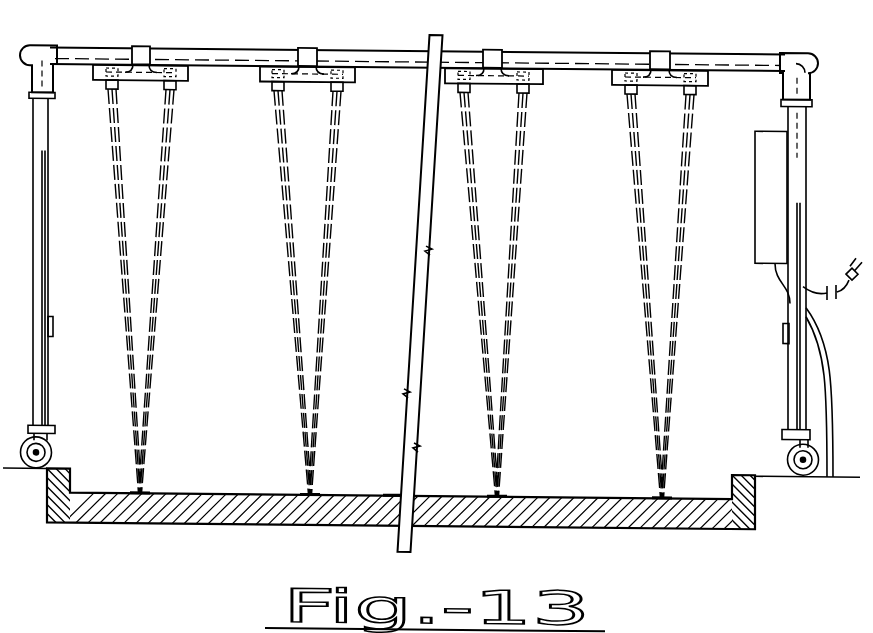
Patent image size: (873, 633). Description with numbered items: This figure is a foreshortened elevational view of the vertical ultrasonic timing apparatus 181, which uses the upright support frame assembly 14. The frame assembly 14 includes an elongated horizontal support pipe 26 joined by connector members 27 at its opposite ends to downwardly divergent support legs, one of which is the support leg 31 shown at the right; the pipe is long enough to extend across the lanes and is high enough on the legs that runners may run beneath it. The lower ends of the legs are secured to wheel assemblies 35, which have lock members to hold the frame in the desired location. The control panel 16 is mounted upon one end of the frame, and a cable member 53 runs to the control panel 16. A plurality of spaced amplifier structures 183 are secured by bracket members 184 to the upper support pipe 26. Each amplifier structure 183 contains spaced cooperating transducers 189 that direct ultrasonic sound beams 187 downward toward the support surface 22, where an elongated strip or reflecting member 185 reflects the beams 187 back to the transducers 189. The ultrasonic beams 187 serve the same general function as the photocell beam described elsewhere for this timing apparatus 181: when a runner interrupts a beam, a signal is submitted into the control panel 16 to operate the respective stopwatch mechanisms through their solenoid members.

The support frame assembly 14 is at (93, 30).
The support pipe 26 is at (220, 48).
The connector members 27 is at (814, 50).
The control panel 16 is at (778, 176).
The support leg 31 is at (797, 235).
The cable member 53 is at (827, 375).
The wheel assemblies 35 is at (818, 439).
The support surface 22 is at (197, 514).
The vertical ultrasonic timing apparatus 181 is at (391, 46).
The amplifier structures 183 is at (267, 80).
The bracket members 184 is at (314, 44).
The reflecting member 185 is at (392, 489).
The ultrasonic sound beams 187 is at (338, 150).
The transducers 189 is at (107, 84).